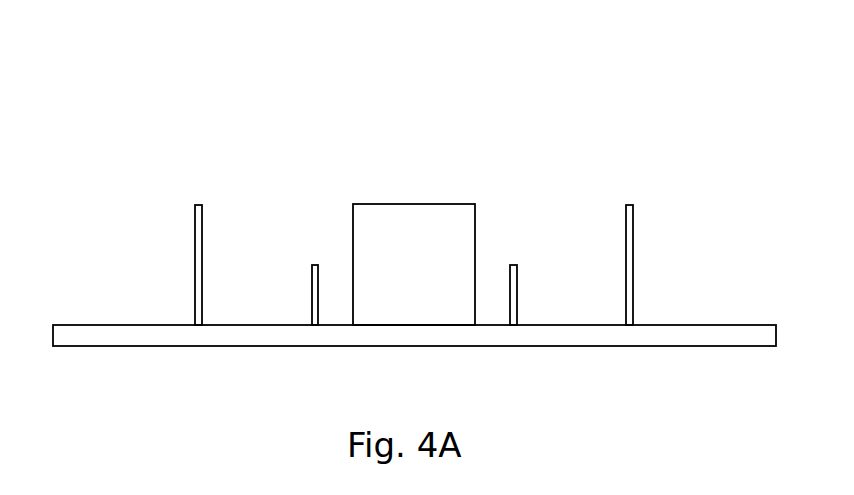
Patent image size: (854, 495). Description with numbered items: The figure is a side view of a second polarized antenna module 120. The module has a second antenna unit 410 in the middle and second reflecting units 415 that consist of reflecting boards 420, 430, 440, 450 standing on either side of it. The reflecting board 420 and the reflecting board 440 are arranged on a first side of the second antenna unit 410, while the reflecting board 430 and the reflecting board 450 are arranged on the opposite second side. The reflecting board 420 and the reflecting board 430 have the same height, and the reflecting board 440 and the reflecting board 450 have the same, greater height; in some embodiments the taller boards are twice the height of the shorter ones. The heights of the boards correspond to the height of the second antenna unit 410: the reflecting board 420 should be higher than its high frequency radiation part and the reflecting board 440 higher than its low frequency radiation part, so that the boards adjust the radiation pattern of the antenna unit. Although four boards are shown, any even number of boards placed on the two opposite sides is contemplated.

The second polarized antenna module 120 is at (45, 40).
The second antenna unit 410 is at (415, 210).
The second reflecting units 415 is at (415, 223).
The reflecting board 420 is at (318, 265).
The reflecting board 430 is at (517, 265).
The reflecting board 440 is at (202, 212).
The reflecting board 450 is at (633, 212).